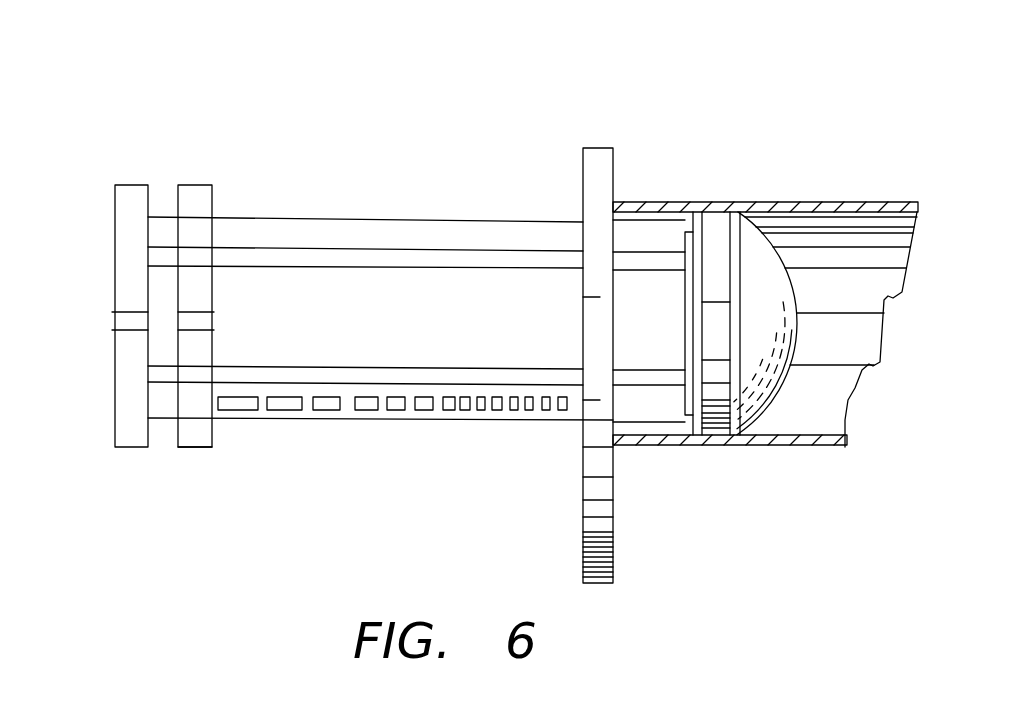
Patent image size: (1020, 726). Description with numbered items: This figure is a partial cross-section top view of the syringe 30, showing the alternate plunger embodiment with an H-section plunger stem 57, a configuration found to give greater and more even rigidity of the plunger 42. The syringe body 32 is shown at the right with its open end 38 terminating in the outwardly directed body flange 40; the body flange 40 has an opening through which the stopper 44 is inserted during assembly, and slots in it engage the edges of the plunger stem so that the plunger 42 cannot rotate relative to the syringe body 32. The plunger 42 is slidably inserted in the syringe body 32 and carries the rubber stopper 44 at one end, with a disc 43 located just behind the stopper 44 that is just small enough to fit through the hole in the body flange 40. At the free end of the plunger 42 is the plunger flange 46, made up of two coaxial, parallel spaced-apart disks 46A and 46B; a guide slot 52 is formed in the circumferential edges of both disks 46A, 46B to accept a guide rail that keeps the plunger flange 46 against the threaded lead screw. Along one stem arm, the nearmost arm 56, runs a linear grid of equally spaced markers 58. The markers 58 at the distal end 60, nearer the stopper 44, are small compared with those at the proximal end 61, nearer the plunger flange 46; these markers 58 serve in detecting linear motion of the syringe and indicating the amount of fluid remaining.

The syringe 30 is at (678, 182).
The syringe body 32 is at (865, 200).
The open end 38 is at (620, 217).
The body flange 40 is at (580, 168).
The plunger 42 is at (416, 279).
The disc 43 is at (683, 397).
The stopper 44 is at (760, 400).
The plunger flange 46 is at (297, 137).
The first disk 46A is at (117, 188).
The second disk 46B is at (212, 186).
The guide slot 52 is at (113, 316).
The nearmost arm 56 is at (380, 452).
The plunger stem 57 is at (333, 257).
The markers 58 is at (327, 410).
The distal end 60 is at (573, 413).
The proximal end 61 is at (212, 425).